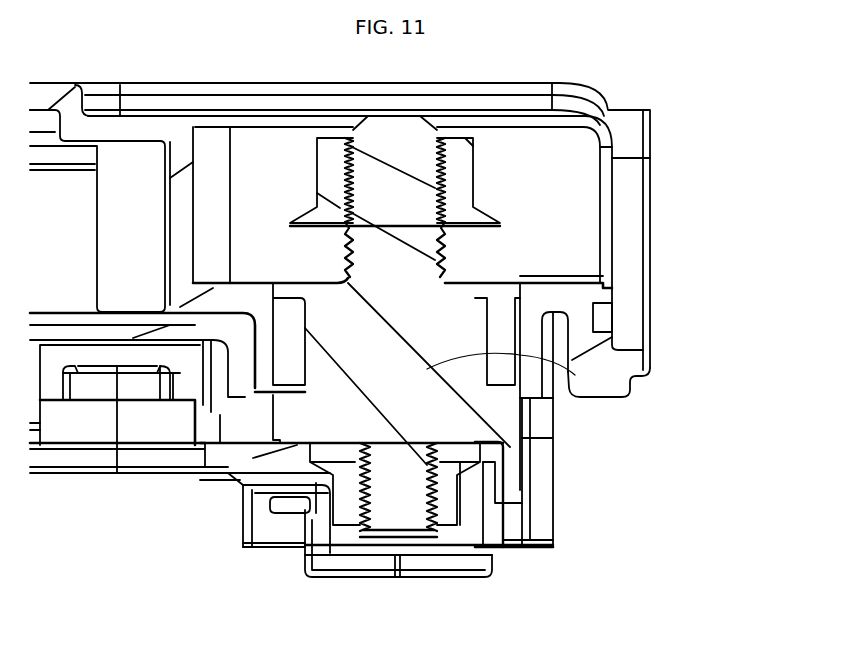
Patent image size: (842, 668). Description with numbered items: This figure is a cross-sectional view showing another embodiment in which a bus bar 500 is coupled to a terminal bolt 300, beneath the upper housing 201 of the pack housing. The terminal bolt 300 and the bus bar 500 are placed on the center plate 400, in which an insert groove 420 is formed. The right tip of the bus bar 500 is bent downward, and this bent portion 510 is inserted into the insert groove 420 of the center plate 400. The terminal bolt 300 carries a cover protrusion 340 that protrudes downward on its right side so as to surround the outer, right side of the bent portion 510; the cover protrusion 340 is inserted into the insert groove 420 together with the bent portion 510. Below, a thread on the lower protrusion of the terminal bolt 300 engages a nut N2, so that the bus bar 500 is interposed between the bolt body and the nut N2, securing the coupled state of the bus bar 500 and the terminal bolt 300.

The upper housing 201 is at (672, 222).
The terminal bolt 300 is at (617, 388).
The cover protrusion 340 is at (515, 487).
The center plate 400 is at (137, 489).
The insert groove 420 is at (508, 508).
The bus bar 500 is at (272, 450).
The bent portion 510 is at (477, 493).
The nut N2 is at (348, 517).